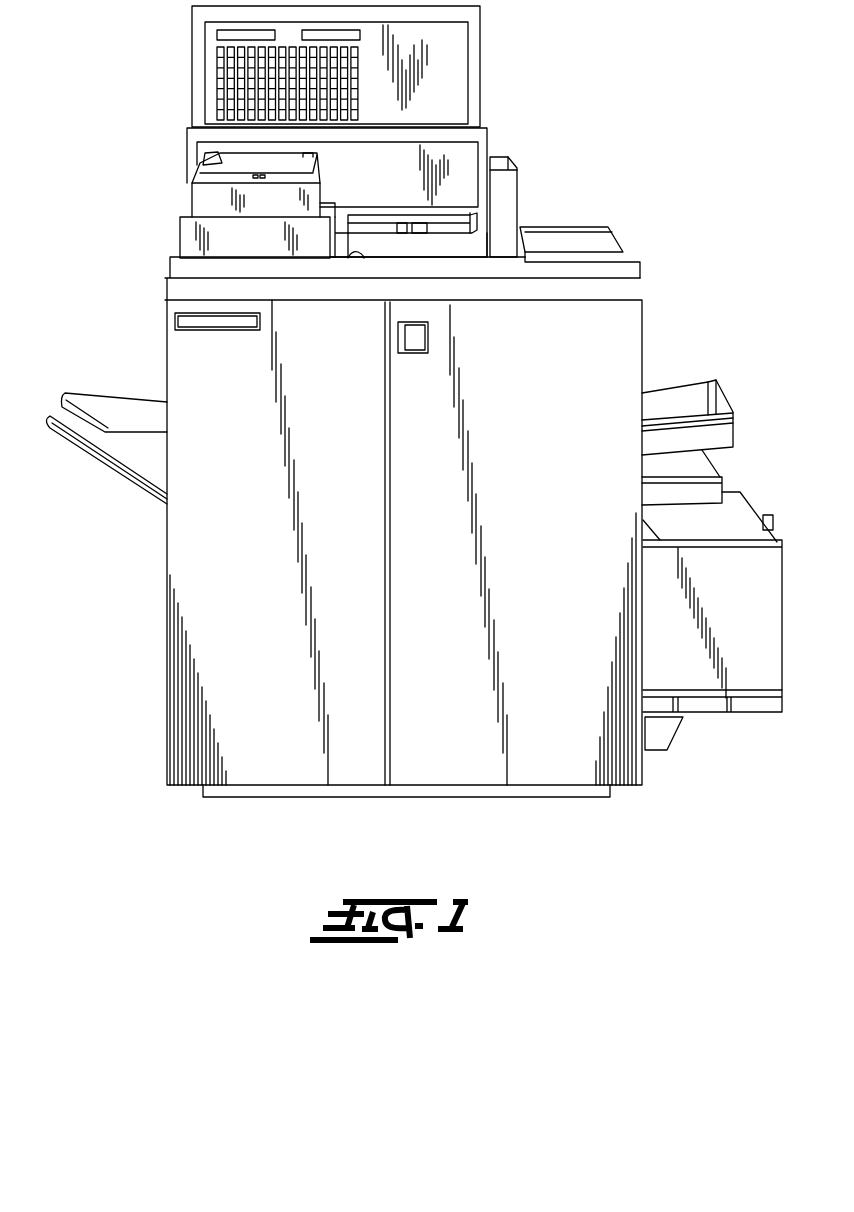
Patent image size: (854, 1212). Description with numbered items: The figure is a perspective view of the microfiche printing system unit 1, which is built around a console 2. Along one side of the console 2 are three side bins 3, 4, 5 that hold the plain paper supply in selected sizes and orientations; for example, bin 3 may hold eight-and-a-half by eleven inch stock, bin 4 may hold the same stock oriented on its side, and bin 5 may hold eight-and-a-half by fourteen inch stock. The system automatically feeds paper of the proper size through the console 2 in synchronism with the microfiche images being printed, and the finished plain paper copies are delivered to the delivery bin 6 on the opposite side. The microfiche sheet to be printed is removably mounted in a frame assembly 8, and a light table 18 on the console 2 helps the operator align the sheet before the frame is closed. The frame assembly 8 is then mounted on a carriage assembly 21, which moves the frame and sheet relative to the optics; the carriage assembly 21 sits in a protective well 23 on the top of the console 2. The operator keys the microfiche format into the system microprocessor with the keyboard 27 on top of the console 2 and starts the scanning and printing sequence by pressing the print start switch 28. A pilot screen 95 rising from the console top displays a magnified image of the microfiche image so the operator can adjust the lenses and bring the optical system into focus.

The microfiche printing system unit 1 is at (160, 348).
The console 2 is at (530, 478).
The side bin 3 is at (733, 670).
The side bin 4 is at (700, 471).
The side bin 5 is at (685, 405).
The delivery bin 6 is at (120, 458).
The frame assembly 8 is at (383, 225).
The light table 18 is at (197, 185).
The carriage assembly 21 is at (343, 237).
The protective well 23 is at (442, 247).
The keyboard 27 is at (240, 92).
The print start switch 28 is at (563, 262).
The pilot screen 95 is at (512, 155).